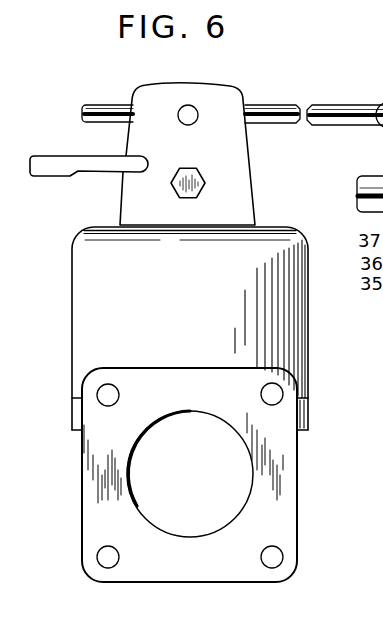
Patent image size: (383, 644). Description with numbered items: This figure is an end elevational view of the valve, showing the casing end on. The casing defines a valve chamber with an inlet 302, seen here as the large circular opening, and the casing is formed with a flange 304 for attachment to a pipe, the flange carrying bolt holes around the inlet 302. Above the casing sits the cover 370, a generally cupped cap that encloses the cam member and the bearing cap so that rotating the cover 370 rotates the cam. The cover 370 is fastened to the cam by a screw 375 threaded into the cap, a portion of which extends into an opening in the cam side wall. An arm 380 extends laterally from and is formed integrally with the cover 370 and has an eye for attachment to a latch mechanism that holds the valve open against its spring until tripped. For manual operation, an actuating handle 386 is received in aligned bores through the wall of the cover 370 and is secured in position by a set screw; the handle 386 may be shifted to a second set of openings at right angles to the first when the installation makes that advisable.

The inlet 302 is at (194, 515).
The flange 304 is at (280, 518).
The cover 370 is at (229, 210).
The screw 375 is at (200, 173).
The arm 380 is at (100, 162).
The actuating handle 386 is at (272, 110).